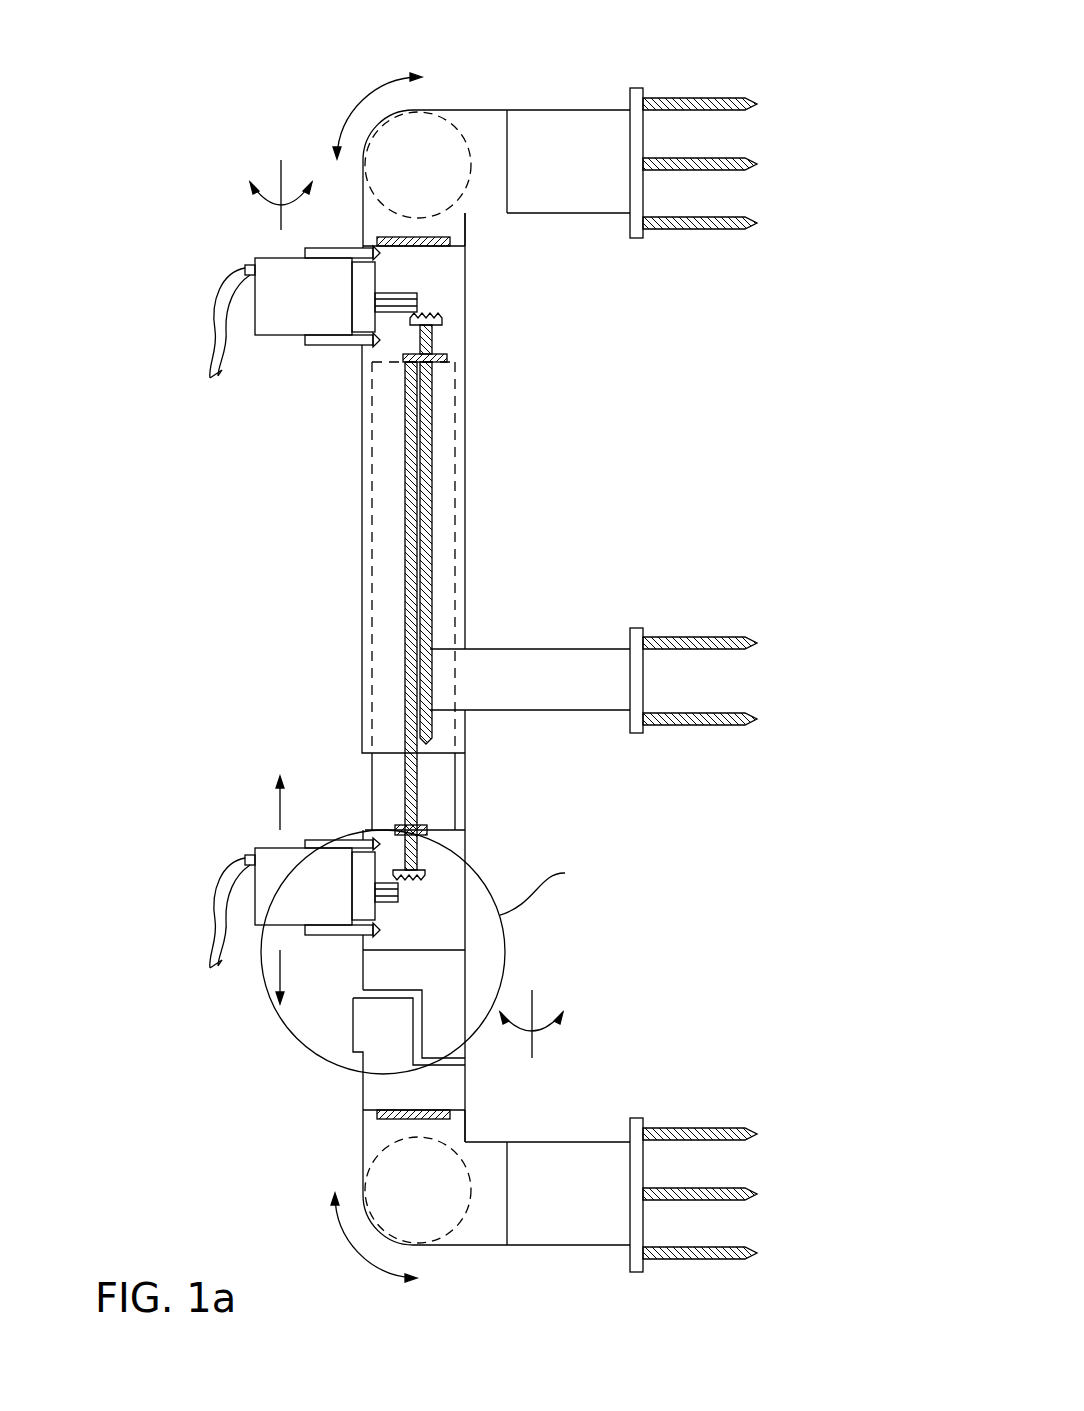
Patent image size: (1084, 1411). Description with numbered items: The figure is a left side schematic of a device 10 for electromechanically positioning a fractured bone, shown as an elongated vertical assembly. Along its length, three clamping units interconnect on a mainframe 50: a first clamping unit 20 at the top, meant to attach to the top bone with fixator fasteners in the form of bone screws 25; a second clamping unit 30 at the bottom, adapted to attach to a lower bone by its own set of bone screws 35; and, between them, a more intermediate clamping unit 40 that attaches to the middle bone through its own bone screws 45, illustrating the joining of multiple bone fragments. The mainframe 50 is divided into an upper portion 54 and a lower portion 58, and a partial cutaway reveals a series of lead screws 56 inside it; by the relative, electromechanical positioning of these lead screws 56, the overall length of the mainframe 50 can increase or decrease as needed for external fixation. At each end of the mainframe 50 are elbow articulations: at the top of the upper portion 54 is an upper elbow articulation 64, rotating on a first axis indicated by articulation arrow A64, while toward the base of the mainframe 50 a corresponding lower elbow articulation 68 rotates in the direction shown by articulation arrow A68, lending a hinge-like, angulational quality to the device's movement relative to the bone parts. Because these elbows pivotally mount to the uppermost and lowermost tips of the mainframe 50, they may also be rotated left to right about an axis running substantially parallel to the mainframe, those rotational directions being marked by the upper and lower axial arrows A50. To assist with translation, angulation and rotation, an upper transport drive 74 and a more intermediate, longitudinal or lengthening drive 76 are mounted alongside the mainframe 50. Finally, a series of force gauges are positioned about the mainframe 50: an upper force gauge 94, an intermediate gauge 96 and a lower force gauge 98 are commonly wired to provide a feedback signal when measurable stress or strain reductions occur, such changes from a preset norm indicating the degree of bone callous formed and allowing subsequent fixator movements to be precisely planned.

The device 10 is at (513, 527).
The first clamping unit 20 is at (597, 110).
The bone screws 25 is at (718, 98).
The second clamping unit 30 is at (554, 1195).
The bone screws 35 is at (715, 1128).
The intermediate clamping unit 40 is at (536, 655).
The bone screws 45 is at (700, 637).
The mainframe 50 is at (367, 785).
The upper portion 54 is at (467, 357).
The lead screws 56 is at (420, 540).
The lower portion 58 is at (465, 968).
The upper elbow articulation 64 is at (480, 110).
The lower elbow articulation 68 is at (363, 1148).
The upper transport drive 74 is at (282, 337).
The lengthening drive 76 is at (265, 840).
The upper force gauge 94 is at (466, 240).
The intermediate gauge 96 is at (632, 716).
The lower force gauge 98 is at (464, 1112).
The axial arrows A50 is at (280, 218).
The articulation arrow A64 is at (352, 107).
The articulation arrow A68 is at (350, 1245).